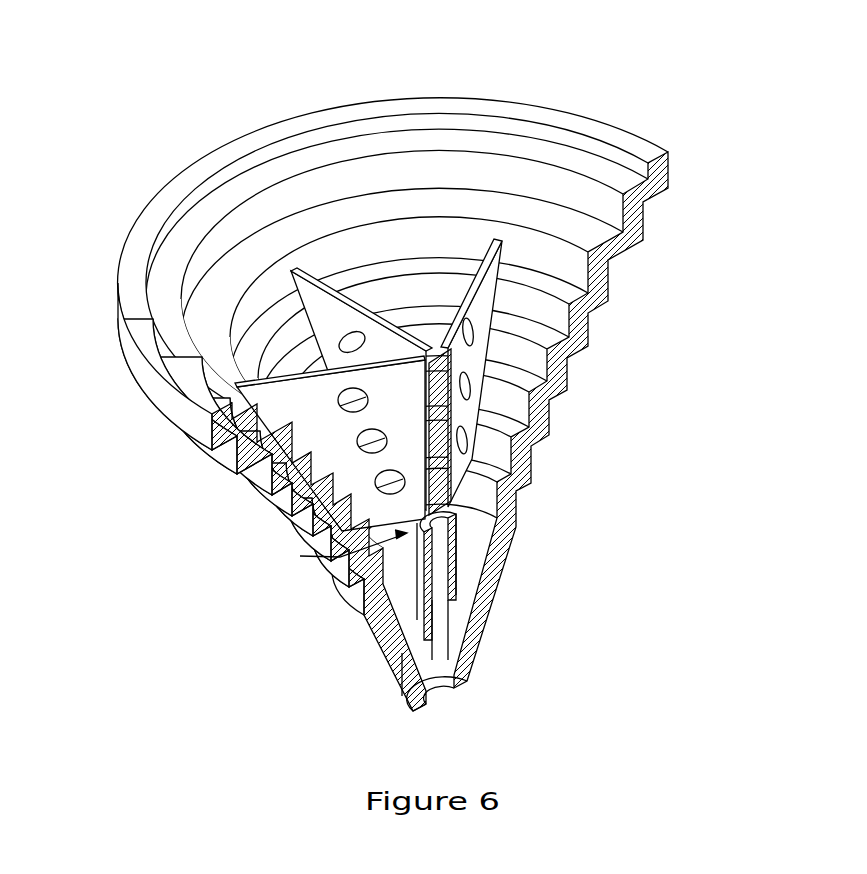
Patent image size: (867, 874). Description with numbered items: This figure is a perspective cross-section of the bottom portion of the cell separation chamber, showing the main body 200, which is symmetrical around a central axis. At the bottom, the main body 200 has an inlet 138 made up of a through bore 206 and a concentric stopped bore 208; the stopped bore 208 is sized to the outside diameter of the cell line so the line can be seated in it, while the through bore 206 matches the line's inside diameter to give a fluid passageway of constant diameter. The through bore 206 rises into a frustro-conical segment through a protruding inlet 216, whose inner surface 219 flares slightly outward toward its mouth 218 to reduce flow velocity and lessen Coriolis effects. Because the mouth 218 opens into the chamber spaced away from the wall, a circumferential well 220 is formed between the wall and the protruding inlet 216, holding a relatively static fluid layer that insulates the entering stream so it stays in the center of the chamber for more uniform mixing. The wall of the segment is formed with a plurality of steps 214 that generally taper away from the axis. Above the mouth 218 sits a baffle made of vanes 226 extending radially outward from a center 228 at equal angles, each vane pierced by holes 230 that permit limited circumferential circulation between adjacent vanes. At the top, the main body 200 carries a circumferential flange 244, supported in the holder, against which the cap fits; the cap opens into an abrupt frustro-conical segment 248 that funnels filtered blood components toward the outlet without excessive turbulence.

The main body 200 is at (207, 131).
The vanes 226 is at (367, 295).
The circumferential flange 244 is at (672, 160).
The steps 214 is at (600, 232).
The holes 230 is at (470, 332).
The center 228 is at (455, 358).
The protruding inlet 216 is at (262, 449).
The mouth 218 is at (440, 518).
The circumferential well 220 is at (475, 538).
The inner surface 219 is at (410, 570).
The abrupt frustro-conical segment 248 is at (438, 535).
The through bore 206 is at (447, 613).
The stopped bore 208 is at (447, 653).
The inlet 138 is at (447, 683).